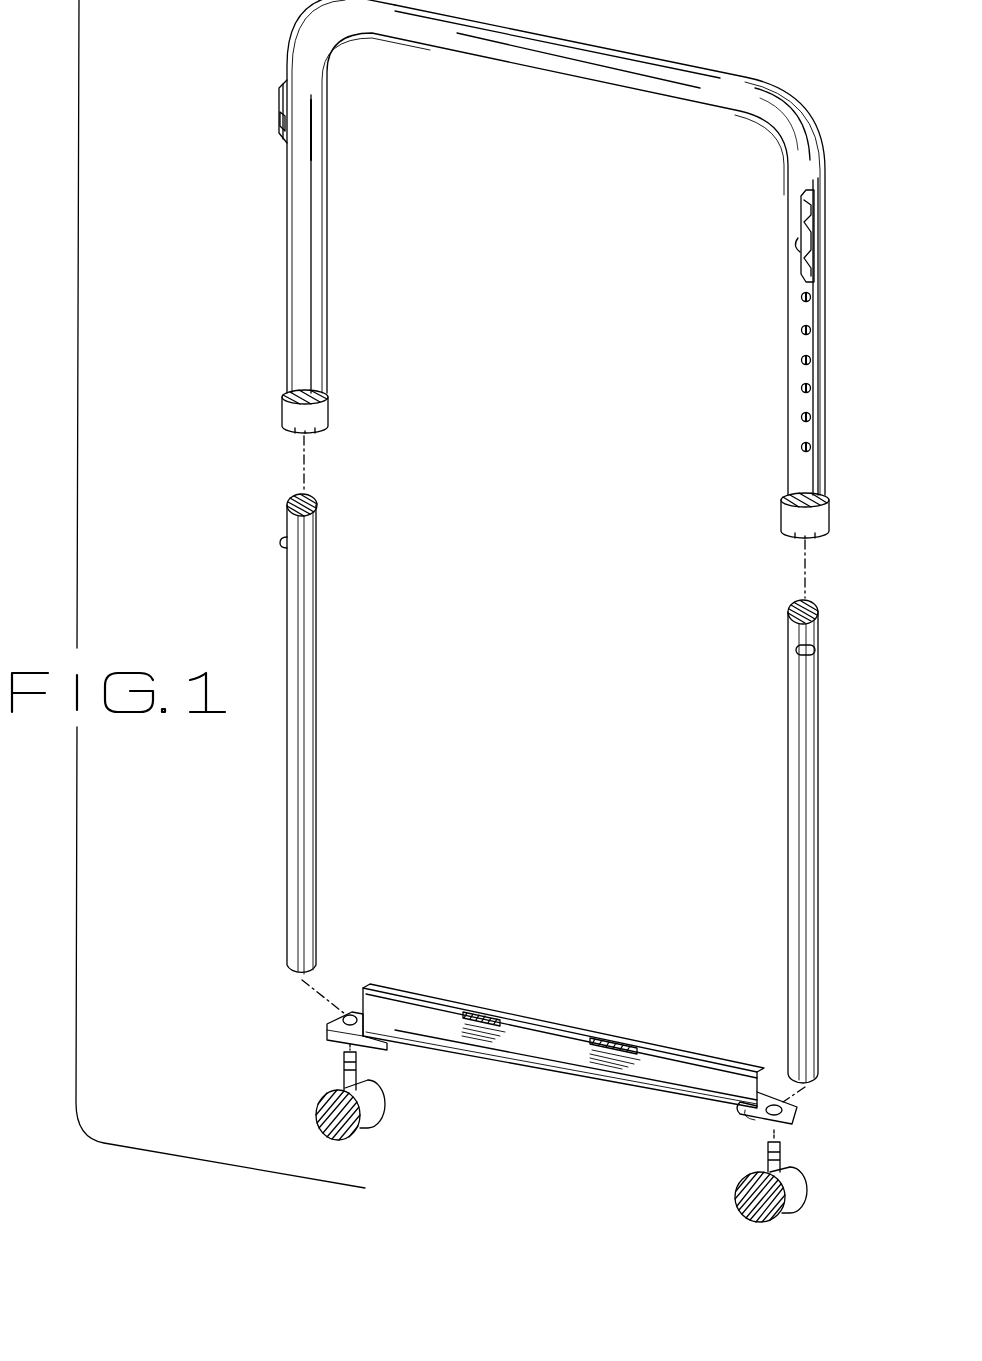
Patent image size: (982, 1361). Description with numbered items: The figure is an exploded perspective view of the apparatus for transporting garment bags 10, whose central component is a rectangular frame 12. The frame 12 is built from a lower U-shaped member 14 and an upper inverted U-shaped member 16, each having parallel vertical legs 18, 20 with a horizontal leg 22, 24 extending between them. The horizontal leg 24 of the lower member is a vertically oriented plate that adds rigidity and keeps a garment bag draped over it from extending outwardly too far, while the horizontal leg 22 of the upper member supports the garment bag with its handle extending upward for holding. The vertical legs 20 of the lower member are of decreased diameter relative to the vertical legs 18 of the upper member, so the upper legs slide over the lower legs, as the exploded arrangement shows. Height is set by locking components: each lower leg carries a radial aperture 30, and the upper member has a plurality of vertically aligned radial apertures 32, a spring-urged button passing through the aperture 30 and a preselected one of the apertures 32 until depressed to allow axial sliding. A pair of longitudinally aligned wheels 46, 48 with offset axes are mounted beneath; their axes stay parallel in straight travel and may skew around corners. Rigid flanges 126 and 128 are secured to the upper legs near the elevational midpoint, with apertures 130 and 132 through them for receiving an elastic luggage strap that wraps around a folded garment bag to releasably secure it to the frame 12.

The apparatus for transporting garment bags 10 is at (244, 277).
The frame 12 is at (288, 250).
The lower U-shaped member 14 is at (816, 1022).
The upper inverted U-shaped member 16 is at (760, 81).
The vertical legs 18 is at (290, 196).
The vertical legs 20 is at (289, 753).
The horizontal leg 22 is at (611, 54).
The horizontal leg 24 is at (553, 1052).
The radial aperture 30 is at (810, 650).
The vertically aligned radial apertures 32 is at (812, 447).
The wheel 46 is at (757, 1212).
The wheel 48 is at (322, 1120).
The flange 126 is at (818, 233).
The flange 128 is at (281, 96).
The aperture 130 is at (812, 270).
The aperture 132 is at (282, 120).